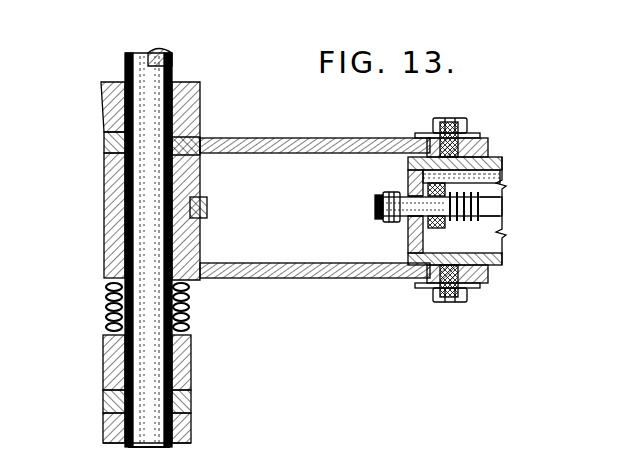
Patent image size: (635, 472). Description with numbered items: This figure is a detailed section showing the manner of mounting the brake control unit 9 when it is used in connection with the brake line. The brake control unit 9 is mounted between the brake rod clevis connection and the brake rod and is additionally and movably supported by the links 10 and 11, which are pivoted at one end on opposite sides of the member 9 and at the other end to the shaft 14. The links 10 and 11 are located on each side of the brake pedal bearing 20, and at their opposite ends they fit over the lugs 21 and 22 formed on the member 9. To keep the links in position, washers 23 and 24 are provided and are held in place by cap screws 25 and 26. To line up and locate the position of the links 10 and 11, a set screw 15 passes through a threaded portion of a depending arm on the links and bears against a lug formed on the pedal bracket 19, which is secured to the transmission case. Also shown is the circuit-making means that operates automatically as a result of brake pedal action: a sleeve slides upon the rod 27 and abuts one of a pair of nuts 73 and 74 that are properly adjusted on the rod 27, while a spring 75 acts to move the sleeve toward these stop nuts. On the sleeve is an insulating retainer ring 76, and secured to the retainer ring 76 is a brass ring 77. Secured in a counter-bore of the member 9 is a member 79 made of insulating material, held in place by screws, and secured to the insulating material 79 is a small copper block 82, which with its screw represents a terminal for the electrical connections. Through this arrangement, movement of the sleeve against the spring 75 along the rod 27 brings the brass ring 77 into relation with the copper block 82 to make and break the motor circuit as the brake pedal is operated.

The brake control unit 9 is at (505, 160).
The link 10 is at (280, 138).
The link 11 is at (280, 278).
The shaft 14 is at (140, 213).
The set screw 15 is at (186, 455).
The pedal bracket 19 is at (110, 105).
The brake pedal bearing 20 is at (108, 240).
The lug 21 is at (473, 126).
The lug 22 is at (465, 296).
The washer 23 is at (421, 124).
The washer 24 is at (478, 288).
The cap screw 25 is at (452, 118).
The cap screw 26 is at (447, 302).
The rod 27 is at (488, 209).
The nut 73 is at (392, 222).
The nut 74 is at (376, 232).
The spring 75 is at (490, 192).
The insulating retainer ring 76 is at (496, 239).
The brass ring 77 is at (396, 280).
The insulating member 79 is at (366, 280).
The copper block 82 is at (508, 173).